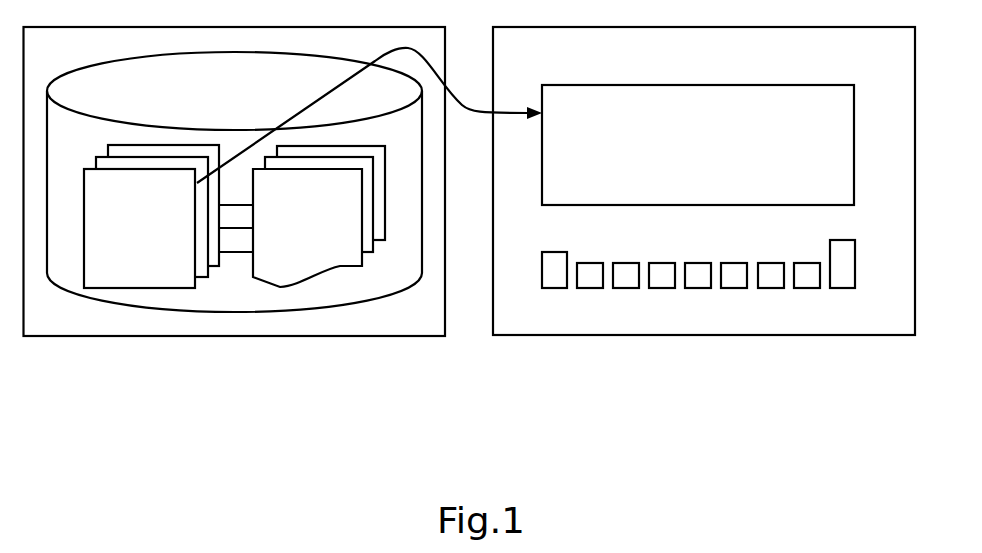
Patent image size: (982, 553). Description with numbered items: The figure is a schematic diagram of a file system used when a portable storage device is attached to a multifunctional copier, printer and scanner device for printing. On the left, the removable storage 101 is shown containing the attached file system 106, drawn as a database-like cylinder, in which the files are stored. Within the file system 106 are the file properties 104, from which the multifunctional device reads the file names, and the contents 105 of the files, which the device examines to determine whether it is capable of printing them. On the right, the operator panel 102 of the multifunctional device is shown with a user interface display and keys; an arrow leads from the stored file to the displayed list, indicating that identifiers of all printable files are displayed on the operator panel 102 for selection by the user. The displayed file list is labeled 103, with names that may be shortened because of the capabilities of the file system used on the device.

The removable storage 101 is at (373, 336).
The operator panel 102 is at (605, 335).
The file list displayed on screen 103 is at (697, 115).
The file properties 104 is at (146, 286).
The contents 105 is at (277, 287).
The file system 106 is at (72, 292).